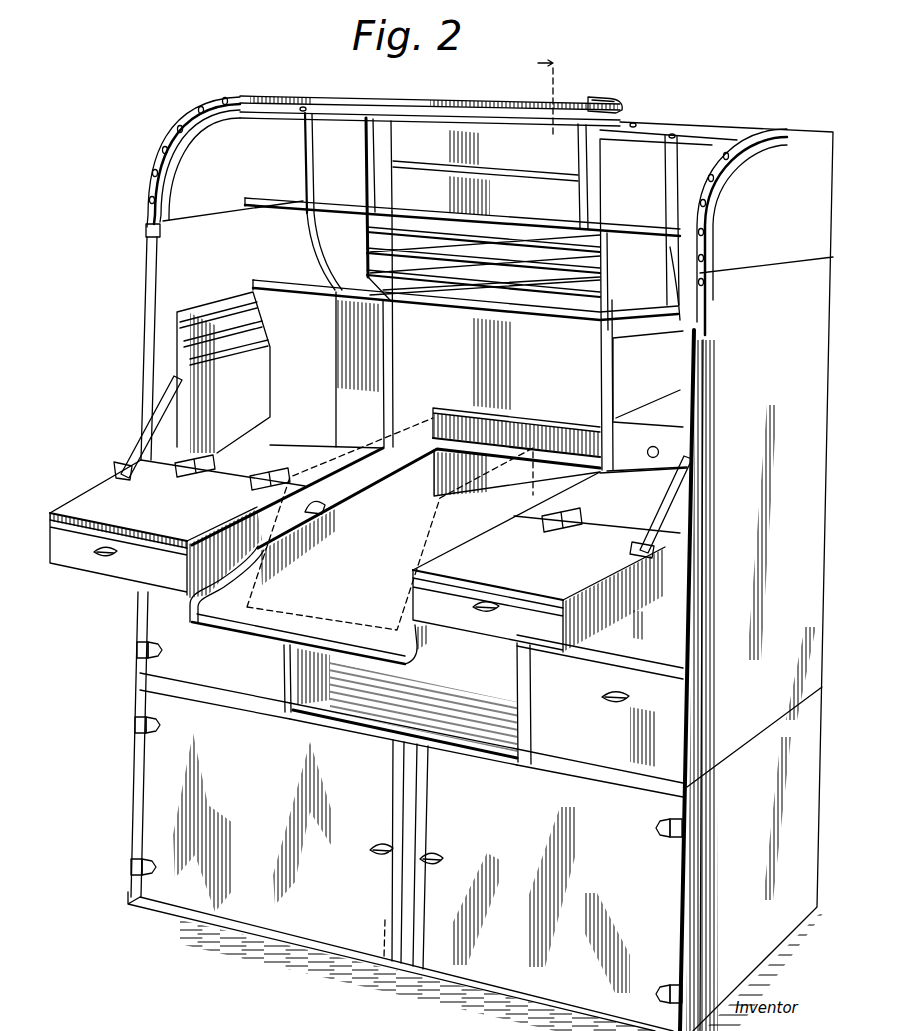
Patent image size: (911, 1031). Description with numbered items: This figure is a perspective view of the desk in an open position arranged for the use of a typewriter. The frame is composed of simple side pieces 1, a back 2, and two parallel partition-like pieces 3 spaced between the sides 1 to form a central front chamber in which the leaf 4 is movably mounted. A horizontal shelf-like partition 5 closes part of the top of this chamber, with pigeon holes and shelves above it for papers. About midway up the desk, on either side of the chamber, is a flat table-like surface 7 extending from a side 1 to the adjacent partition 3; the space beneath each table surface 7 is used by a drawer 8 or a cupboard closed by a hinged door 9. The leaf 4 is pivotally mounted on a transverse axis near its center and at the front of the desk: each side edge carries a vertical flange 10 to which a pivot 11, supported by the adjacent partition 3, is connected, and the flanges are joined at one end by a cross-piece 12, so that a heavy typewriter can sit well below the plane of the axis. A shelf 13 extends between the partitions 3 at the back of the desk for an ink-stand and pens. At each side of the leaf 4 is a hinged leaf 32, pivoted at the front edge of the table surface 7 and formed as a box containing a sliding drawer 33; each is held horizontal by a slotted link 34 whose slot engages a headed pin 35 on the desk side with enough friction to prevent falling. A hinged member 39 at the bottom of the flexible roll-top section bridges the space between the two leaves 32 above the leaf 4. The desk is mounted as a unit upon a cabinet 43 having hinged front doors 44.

The side pieces 1 is at (472, 563).
The back 2 is at (478, 386).
The partition-like pieces 3 is at (464, 291).
The leaf 4 is at (380, 992).
The horizontal shelf-like partition 5 is at (552, 323).
The table-like surface 7 is at (414, 479).
The drawer 8 is at (600, 703).
The hinged door 9 is at (215, 685).
The vertical flange 10 is at (395, 556).
The pivot 11 is at (318, 512).
The cross-piece 12 is at (517, 476).
The shelf 13 is at (565, 428).
The hinged leaf 32 is at (357, 553).
The sliding drawer 33 is at (130, 563).
The slotted link 34 is at (124, 434).
The headed pin 35 is at (174, 378).
The hinged member 39 is at (622, 106).
The cabinet 43 is at (137, 806).
The hinged front doors 44 is at (427, 868).